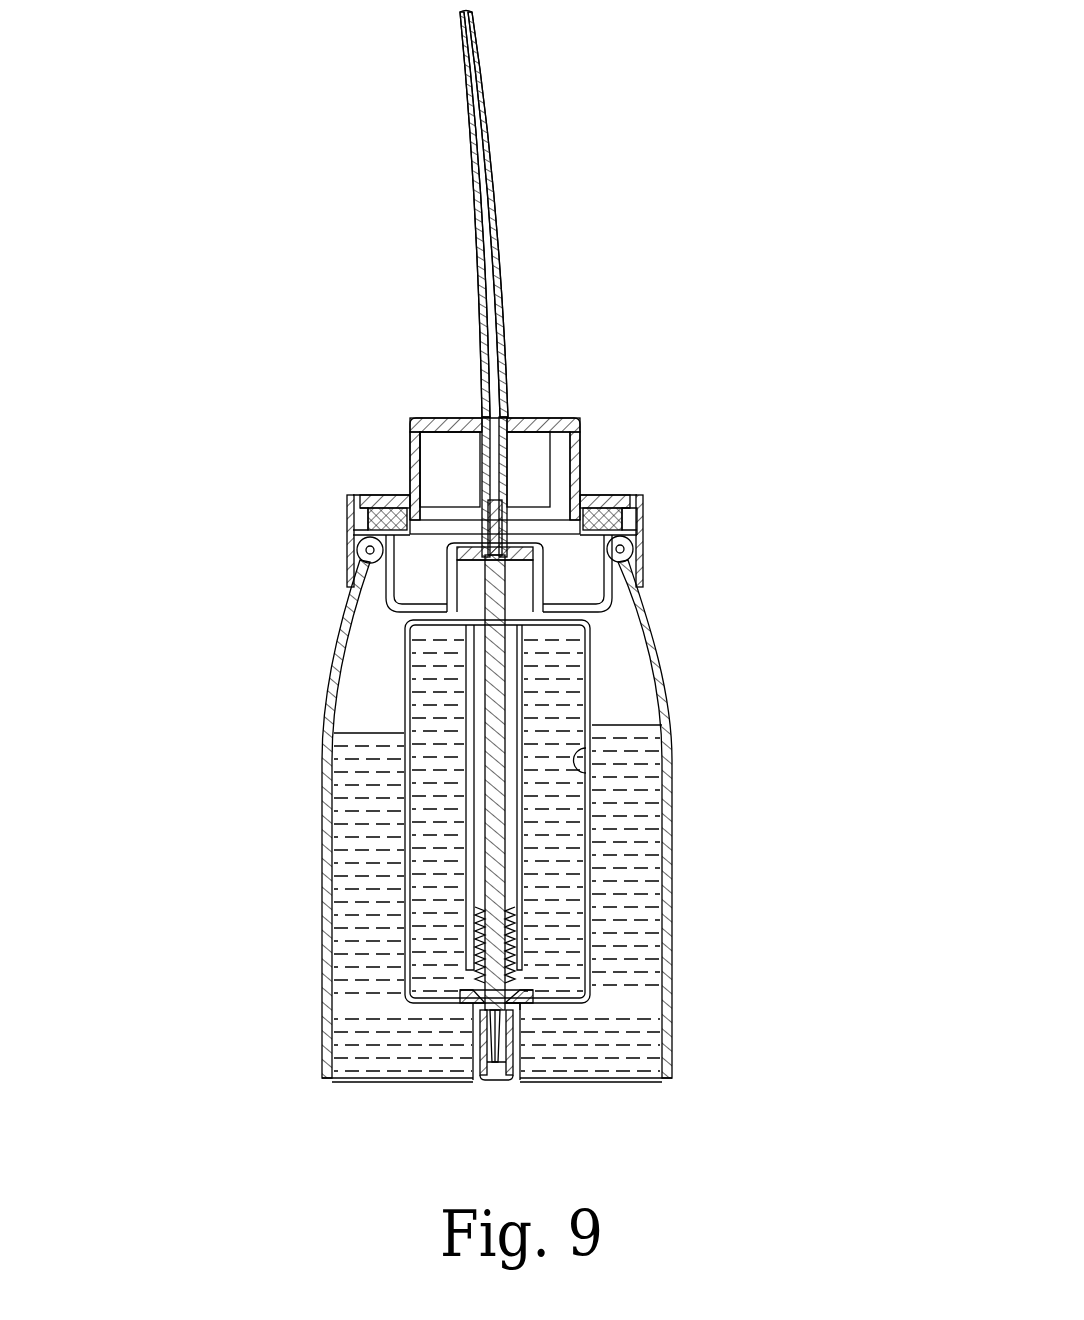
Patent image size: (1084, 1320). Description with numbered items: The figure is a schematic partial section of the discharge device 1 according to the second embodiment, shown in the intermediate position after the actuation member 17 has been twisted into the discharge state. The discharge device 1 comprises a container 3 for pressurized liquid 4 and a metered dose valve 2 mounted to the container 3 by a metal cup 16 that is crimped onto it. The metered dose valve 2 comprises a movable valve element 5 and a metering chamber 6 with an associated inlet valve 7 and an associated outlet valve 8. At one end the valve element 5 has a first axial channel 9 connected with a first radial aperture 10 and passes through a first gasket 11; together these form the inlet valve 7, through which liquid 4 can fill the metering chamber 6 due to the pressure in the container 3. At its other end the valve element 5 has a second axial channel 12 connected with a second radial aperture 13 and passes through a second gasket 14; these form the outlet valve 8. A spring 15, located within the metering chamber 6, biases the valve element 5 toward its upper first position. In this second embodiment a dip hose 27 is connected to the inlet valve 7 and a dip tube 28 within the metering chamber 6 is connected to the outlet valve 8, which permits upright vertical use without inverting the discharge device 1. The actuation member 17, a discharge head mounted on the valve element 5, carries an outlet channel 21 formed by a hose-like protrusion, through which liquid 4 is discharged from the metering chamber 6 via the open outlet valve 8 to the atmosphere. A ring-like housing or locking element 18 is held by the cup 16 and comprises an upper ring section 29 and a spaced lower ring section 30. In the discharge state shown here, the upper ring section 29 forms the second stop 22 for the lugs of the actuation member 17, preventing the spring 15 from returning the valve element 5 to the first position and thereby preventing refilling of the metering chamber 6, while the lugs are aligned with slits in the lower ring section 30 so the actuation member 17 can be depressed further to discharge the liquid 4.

The discharge device 1 is at (368, 362).
The metered dose valve 2 is at (602, 921).
The container 3 is at (670, 1007).
The pressurized liquid 4 is at (613, 1053).
The valve element 5 is at (473, 963).
The metering chamber 6 is at (580, 773).
The inlet valve 7 is at (532, 1020).
The outlet valve 8 is at (465, 554).
The first axial channel 9 is at (482, 1048).
The first radial aperture 10 is at (475, 1043).
The first gasket 11 is at (480, 987).
The second axial channel 12 is at (507, 495).
The second radial aperture 13 is at (505, 545).
The second gasket 14 is at (620, 520).
The spring 15 is at (517, 958).
The metal cup 16 is at (643, 570).
The actuation member 17 is at (540, 418).
The housing or locking element 18 is at (640, 535).
The outlet channel 21 is at (478, 123).
The second stop 22 is at (392, 515).
The dip hose 27 is at (518, 1073).
The dip tube 28 is at (522, 713).
The upper ring section 29 is at (390, 515).
The lower ring section 30 is at (368, 511).